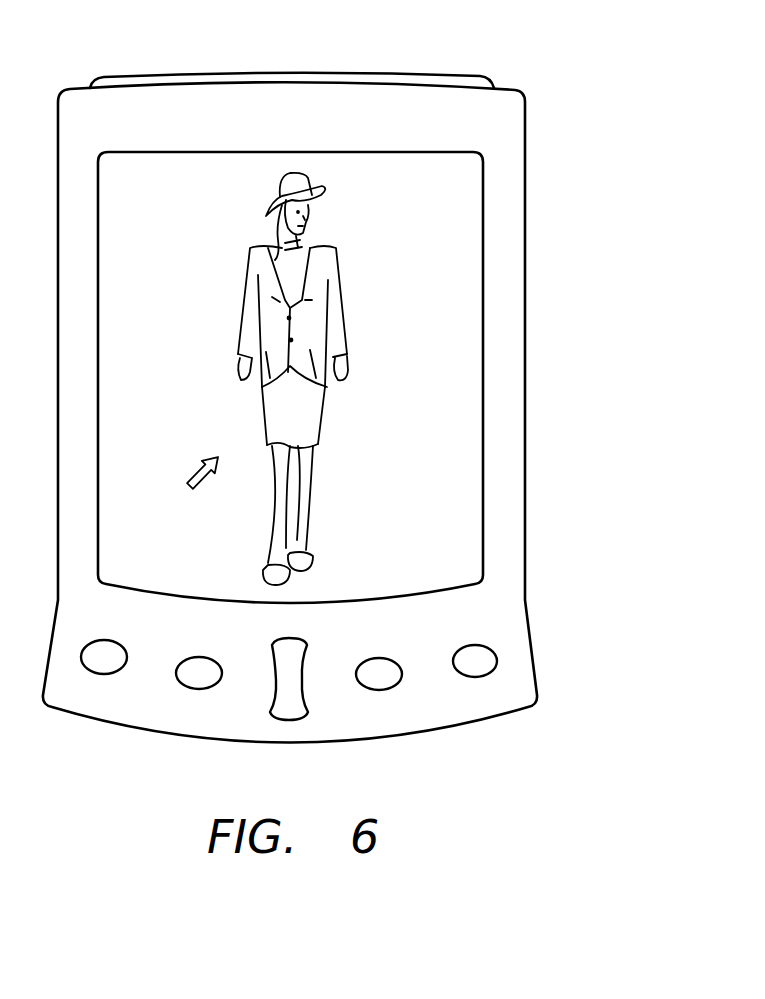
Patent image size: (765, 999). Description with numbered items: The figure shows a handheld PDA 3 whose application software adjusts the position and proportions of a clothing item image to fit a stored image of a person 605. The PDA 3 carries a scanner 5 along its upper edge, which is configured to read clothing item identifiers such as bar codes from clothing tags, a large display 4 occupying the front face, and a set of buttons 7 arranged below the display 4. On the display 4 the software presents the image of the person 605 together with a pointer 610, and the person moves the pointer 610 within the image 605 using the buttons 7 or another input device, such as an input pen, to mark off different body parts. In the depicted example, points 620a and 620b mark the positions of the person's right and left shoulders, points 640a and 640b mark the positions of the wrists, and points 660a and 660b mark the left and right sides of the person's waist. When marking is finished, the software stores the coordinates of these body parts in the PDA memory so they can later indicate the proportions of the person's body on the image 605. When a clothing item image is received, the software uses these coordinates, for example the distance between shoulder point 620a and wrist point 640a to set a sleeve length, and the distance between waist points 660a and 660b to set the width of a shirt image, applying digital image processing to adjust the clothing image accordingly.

The PDA 3 is at (530, 270).
The display 4 is at (450, 442).
The scanner 5 is at (388, 74).
The buttons 7 is at (172, 692).
The image of the person 605 is at (340, 231).
The pointer 610 is at (190, 486).
The right shoulder point 620a is at (250, 246).
The left shoulder point 620b is at (336, 257).
The left wrist point 640a is at (238, 351).
The right wrist point 640b is at (340, 354).
The left waist point 660a is at (282, 393).
The right waist point 660b is at (326, 393).